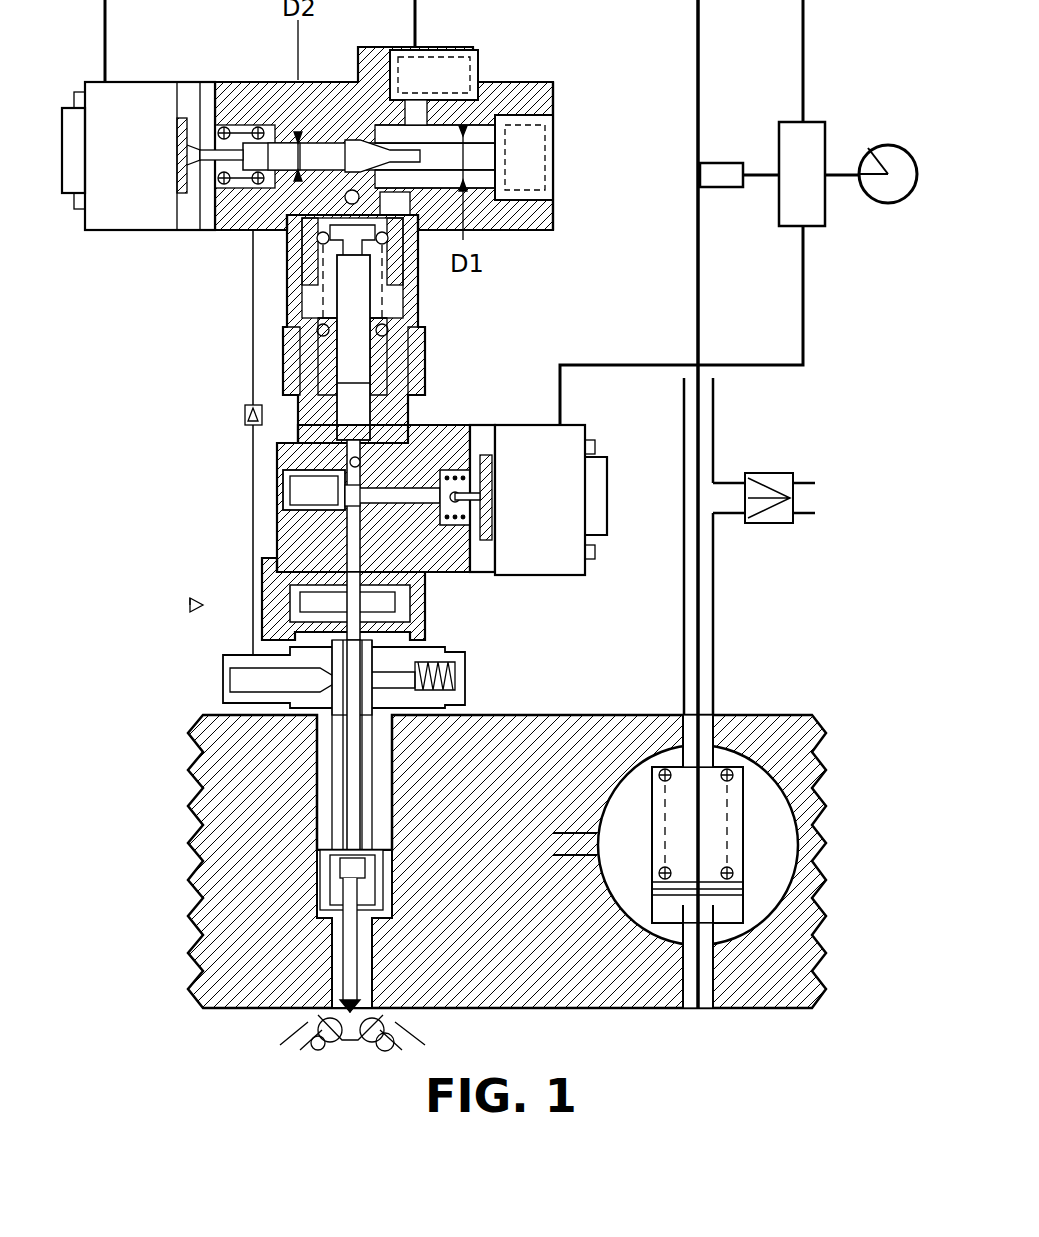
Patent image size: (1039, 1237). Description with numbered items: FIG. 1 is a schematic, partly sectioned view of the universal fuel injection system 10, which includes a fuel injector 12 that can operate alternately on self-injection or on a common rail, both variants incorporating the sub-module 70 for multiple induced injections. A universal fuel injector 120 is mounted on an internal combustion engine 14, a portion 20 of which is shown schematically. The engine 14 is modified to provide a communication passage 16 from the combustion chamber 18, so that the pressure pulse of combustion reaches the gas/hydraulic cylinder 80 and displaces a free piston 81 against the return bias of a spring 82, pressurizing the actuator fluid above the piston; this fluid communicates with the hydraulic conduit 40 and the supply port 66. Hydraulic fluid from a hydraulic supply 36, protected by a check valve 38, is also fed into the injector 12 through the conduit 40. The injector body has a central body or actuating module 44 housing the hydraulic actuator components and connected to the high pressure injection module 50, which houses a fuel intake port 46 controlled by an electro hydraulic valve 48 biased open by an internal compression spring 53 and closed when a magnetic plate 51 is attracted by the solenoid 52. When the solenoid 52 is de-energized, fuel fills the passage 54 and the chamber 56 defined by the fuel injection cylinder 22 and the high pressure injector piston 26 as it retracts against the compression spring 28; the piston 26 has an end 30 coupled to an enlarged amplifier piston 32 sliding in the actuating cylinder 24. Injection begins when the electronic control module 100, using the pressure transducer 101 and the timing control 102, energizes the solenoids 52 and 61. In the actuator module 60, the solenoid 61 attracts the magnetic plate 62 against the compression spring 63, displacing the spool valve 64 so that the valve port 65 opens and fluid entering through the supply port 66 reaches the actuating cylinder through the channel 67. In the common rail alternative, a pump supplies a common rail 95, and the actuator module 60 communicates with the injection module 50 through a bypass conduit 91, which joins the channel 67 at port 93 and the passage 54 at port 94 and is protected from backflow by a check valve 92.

The universal fuel injection system 10 is at (556, 80).
The fuel injector 12 is at (284, 304).
The internal combustion engine 14 is at (240, 1012).
The communication passage 16 is at (705, 960).
The combustion chamber 18 is at (410, 1040).
The portion of the engine 20 is at (203, 878).
The fuel injection cylinder 22 is at (320, 340).
The actuating cylinder 24 is at (395, 290).
The high pressure injector piston 26 is at (400, 370).
The compression spring 28 is at (388, 318).
The end of injector piston 30 is at (385, 235).
The amplifier piston 32 is at (300, 262).
The hydraulic supply 36 is at (812, 500).
The check valve 38 is at (793, 525).
The hydraulic conduit 40 is at (713, 300).
The central body 44 is at (410, 385).
The fuel intake port 46 is at (277, 515).
The electro hydraulic valve 48 is at (400, 507).
The high pressure injection module 50 is at (418, 430).
The magnetic plate 51 is at (498, 477).
The solenoid 52 is at (607, 500).
The internal compression spring 53 is at (475, 513).
The passage 54 is at (352, 538).
The chamber 56 is at (350, 456).
The actuator module 60 is at (492, 82).
The solenoid 61 is at (95, 83).
The magnetic plate 62 is at (180, 150).
The compression spring 63 is at (225, 130).
The spool valve 64 is at (286, 155).
The valve port 65 is at (365, 140).
The supply port 66 is at (438, 50).
The channel 67 is at (400, 195).
The sub-module 70 is at (265, 602).
The gas/hydraulic cylinder 80 is at (738, 823).
The free piston 81 is at (720, 880).
The spring 82 is at (733, 782).
The bypass conduit 91 is at (253, 392).
The check valve 92 is at (245, 414).
The port 93 is at (318, 256).
The port 94 is at (280, 472).
The common rail 95 is at (560, 860).
The electronic control module 100 is at (828, 148).
The pressure transducer 101 is at (728, 163).
The timing control 102 is at (917, 194).
The universal fuel injector 120 is at (322, 800).